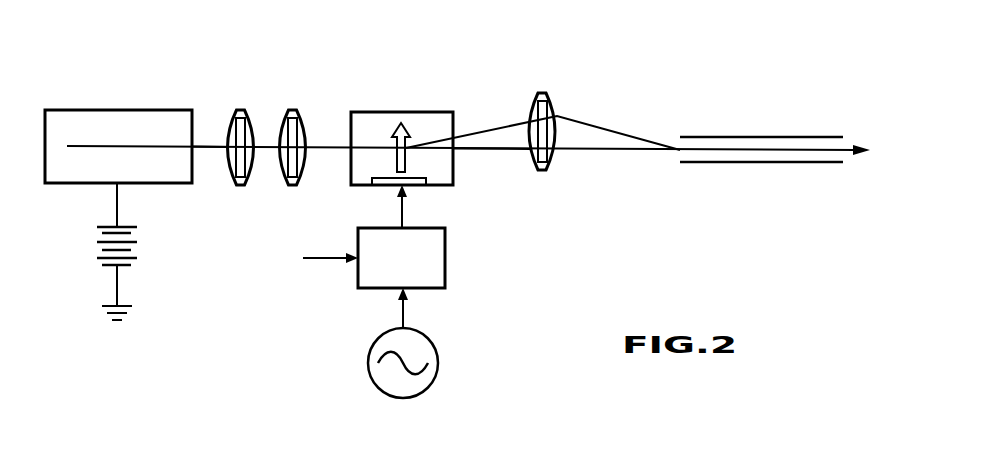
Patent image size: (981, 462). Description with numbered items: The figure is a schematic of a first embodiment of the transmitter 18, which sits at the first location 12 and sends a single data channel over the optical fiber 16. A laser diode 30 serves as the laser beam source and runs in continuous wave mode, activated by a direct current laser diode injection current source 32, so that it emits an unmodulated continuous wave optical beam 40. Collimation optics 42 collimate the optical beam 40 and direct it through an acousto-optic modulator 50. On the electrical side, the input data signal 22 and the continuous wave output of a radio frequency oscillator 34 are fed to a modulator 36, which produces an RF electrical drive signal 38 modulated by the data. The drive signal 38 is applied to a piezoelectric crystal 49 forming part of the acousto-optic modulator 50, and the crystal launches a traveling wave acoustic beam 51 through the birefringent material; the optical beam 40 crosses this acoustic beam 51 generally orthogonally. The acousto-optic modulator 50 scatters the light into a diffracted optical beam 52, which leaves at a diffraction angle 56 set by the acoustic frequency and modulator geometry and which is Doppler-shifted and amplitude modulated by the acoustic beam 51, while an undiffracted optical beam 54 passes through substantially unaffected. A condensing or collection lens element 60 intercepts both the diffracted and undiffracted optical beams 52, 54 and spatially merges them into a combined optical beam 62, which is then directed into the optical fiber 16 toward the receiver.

The first location 12 is at (118, 66).
The optical fiber 16 is at (762, 162).
The transmitter 18 is at (101, 352).
The input data signal 22 is at (332, 258).
The laser diode 30 is at (117, 108).
The direct current laser diode injection current source 32 is at (133, 227).
The radio frequency oscillator 34 is at (370, 373).
The modulator 36 is at (445, 258).
The RF electrical drive signal 38 is at (407, 208).
The continuous wave optical beam 40 is at (211, 143).
The collimation optics 42 is at (291, 112).
The piezoelectric crystal 49 is at (426, 178).
The acousto-optic modulator 50 is at (402, 112).
The traveling wave acoustic beam 51 is at (393, 160).
The diffracted optical beam 52 is at (473, 133).
The undiffracted optical beam 54 is at (500, 150).
The diffraction angle 56 is at (516, 138).
The optical condensing or collection lens element 60 is at (545, 167).
The combined optical beam 62 is at (678, 150).